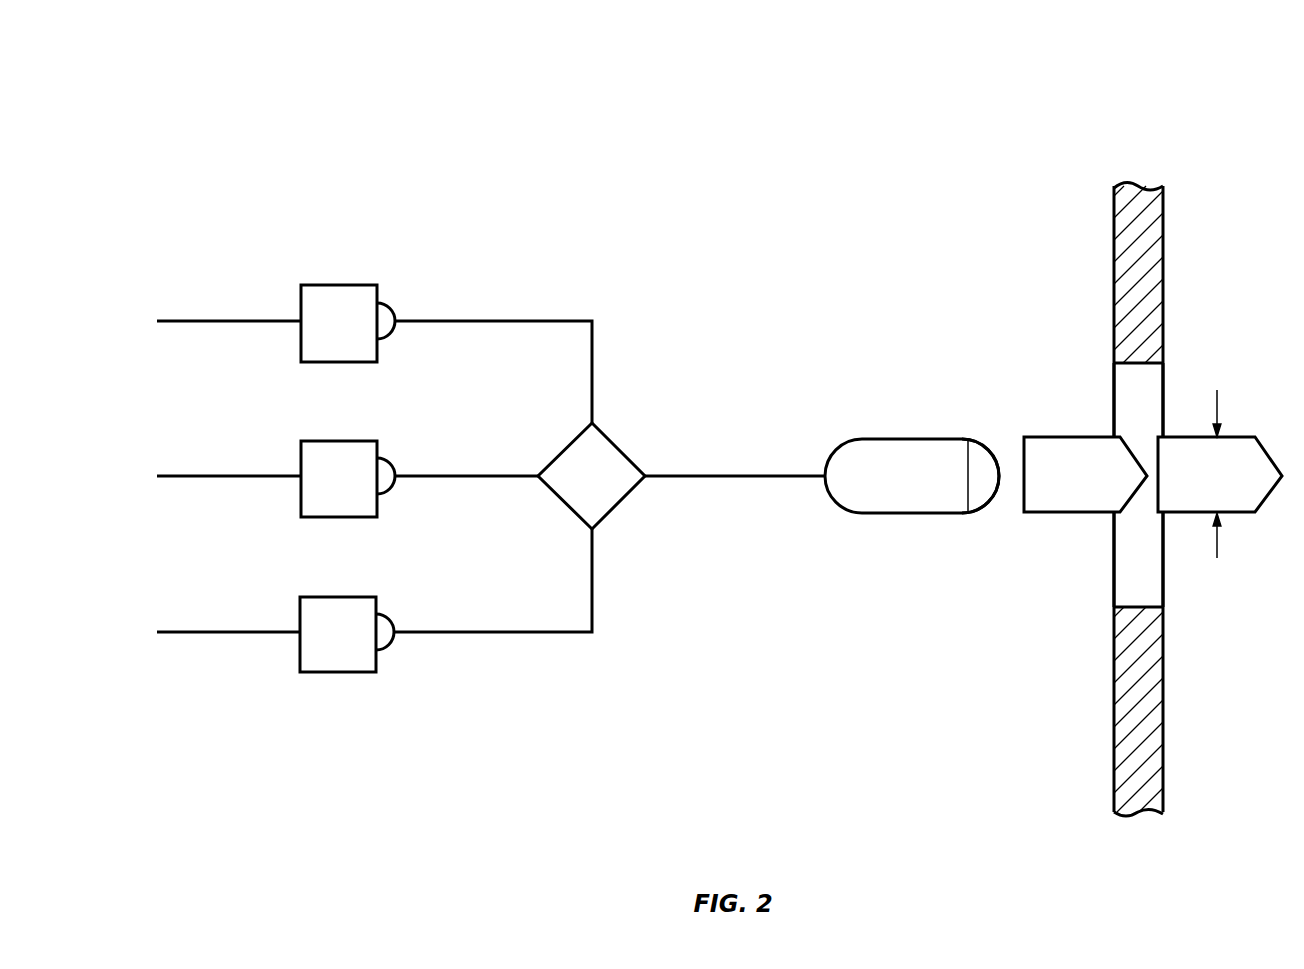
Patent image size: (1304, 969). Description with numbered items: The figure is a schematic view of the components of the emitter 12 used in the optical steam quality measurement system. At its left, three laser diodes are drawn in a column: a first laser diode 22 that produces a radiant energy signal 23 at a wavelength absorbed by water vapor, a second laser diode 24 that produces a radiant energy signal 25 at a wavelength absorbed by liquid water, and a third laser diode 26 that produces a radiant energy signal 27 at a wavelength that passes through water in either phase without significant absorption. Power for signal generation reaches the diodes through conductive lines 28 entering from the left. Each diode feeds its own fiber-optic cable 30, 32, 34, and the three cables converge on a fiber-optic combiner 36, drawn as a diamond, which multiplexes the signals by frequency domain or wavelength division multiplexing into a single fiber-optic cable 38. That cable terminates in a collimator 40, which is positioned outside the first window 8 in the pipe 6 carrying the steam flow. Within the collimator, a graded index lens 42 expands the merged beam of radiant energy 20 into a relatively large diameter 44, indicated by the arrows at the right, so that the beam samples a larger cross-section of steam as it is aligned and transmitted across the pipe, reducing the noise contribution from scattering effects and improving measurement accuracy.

The emitter 12 is at (345, 128).
The first laser diode 22 is at (334, 285).
The radiant energy signal 23 is at (396, 318).
The second laser diode 24 is at (300, 496).
The radiant energy signal 25 is at (394, 486).
The third laser diode 26 is at (335, 672).
The radiant energy signal 27 is at (394, 642).
The conductive lines 28 is at (210, 322).
The fiber-optic cable 30 is at (594, 385).
The fiber-optic cable 32 is at (465, 476).
The fiber-optic cable 34 is at (555, 633).
The fiber-optic combiner 36 is at (616, 506).
The fiber-optic cable 38 is at (737, 476).
The collimator 40 is at (898, 518).
The graded index lens 42 is at (980, 440).
The first window 8 is at (1112, 407).
The pipe 6 is at (1114, 700).
The beam of radiant energy 20 is at (1054, 515).
The diameter 44 is at (1217, 408).